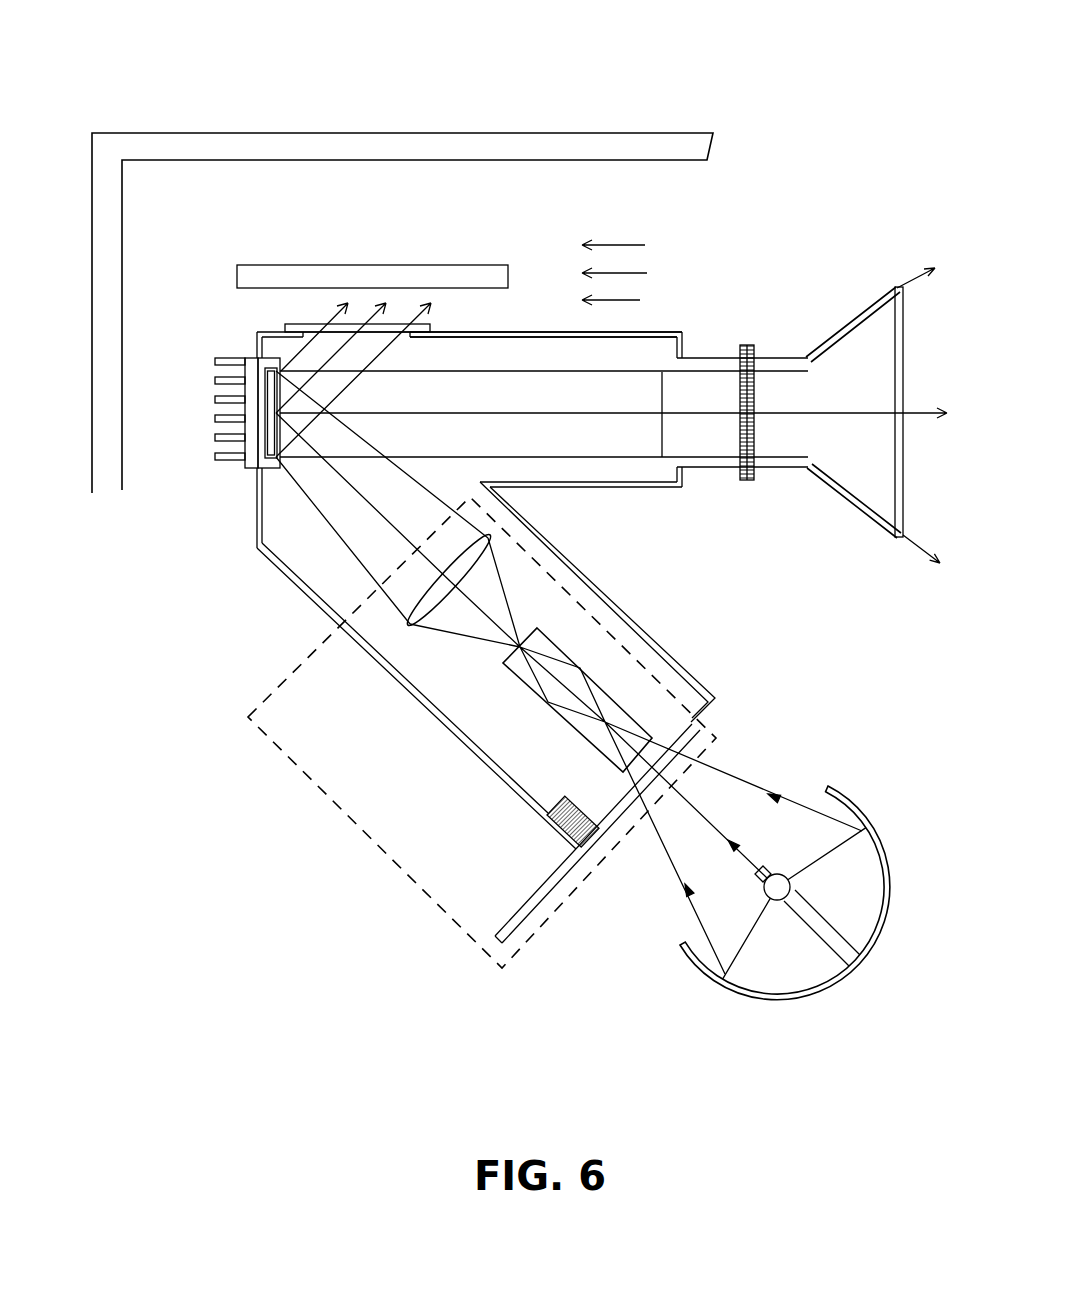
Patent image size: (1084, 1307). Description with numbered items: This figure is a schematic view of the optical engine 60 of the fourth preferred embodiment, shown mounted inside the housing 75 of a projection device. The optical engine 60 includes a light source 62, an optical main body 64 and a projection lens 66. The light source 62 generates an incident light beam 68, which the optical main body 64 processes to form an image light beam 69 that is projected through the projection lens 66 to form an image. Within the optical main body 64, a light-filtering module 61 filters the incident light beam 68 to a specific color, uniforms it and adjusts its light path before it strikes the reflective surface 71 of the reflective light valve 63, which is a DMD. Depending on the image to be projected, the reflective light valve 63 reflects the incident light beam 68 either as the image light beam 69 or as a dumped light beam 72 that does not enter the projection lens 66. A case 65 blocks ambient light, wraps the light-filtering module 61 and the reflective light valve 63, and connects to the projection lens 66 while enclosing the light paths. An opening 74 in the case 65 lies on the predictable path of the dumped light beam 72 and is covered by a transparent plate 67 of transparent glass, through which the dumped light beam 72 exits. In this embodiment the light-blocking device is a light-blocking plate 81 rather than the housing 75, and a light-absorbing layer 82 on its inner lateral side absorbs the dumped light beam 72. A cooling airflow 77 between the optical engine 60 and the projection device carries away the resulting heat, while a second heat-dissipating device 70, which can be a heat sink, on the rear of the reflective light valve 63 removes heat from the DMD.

The optical engine 60 is at (792, 210).
The light-filtering module 61 is at (304, 830).
The light source 62 is at (723, 983).
The reflective light valve 63 is at (262, 470).
The optical main body 64 is at (689, 590).
The case 65 is at (532, 511).
The projection lens 66 is at (790, 470).
The transparent plate 67 is at (393, 325).
The incident light beam 68 is at (672, 865).
The image light beam 69 is at (862, 327).
The second heat-dissipating device 70 is at (247, 354).
The reflective surface 71 is at (266, 428).
The dumped light beam 72 is at (298, 362).
The opening 74 is at (333, 335).
The housing 75 is at (423, 148).
The cooling airflow 77 is at (642, 301).
The light-blocking plate 81 is at (408, 278).
The light-absorbing layer 82 is at (445, 300).